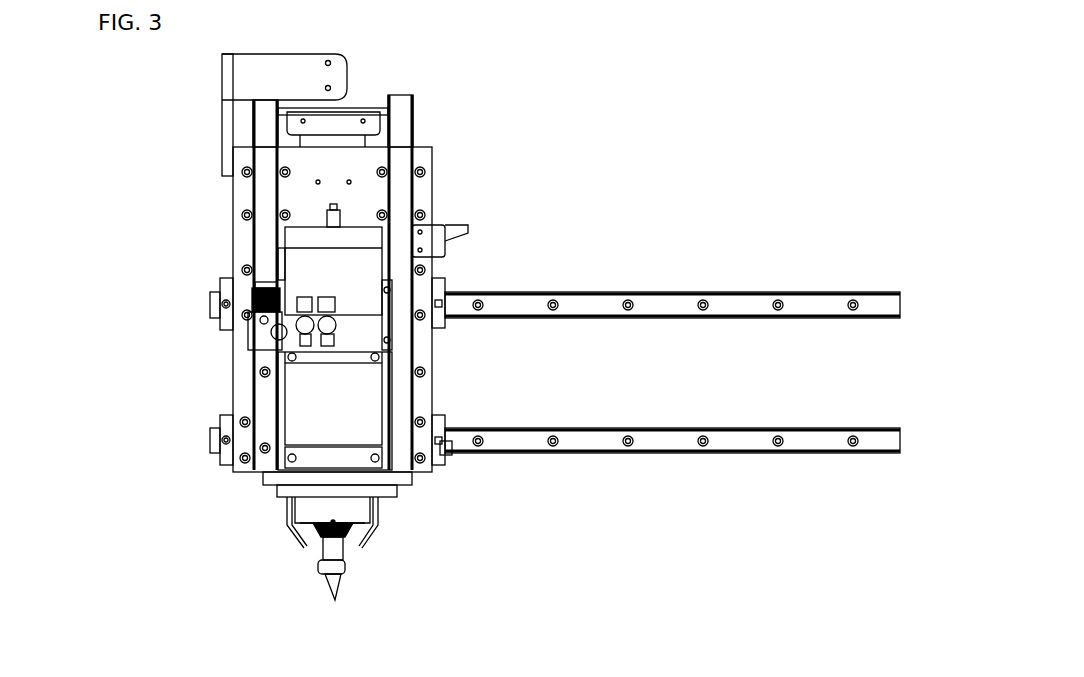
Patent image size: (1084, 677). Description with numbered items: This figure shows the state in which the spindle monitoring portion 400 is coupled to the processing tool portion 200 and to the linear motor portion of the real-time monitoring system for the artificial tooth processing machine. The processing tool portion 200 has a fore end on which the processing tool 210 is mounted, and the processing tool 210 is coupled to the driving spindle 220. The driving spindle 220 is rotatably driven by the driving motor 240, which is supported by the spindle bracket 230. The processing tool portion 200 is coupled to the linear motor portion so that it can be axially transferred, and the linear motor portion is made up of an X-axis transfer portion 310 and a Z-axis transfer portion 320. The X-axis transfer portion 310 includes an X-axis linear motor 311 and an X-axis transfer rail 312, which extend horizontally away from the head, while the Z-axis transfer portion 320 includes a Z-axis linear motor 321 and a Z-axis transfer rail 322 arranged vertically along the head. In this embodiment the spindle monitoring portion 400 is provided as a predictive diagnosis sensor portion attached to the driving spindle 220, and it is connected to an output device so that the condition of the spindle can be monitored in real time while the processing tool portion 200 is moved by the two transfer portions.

The processing tool portion 200 is at (156, 368).
The processing tool 210 is at (334, 593).
The driving spindle 220 is at (305, 543).
The spindle bracket 230 is at (250, 388).
The driving motor 240 is at (335, 265).
The X-axis transfer portion 310 is at (622, 218).
The X-axis linear motor 311 is at (447, 280).
The X-axis transfer rail 312 is at (605, 290).
The Z-axis transfer portion 320 is at (156, 285).
The Z-axis linear motor 321 is at (250, 333).
The Z-axis transfer rail 322 is at (265, 127).
The spindle monitoring portion 400 is at (282, 258).